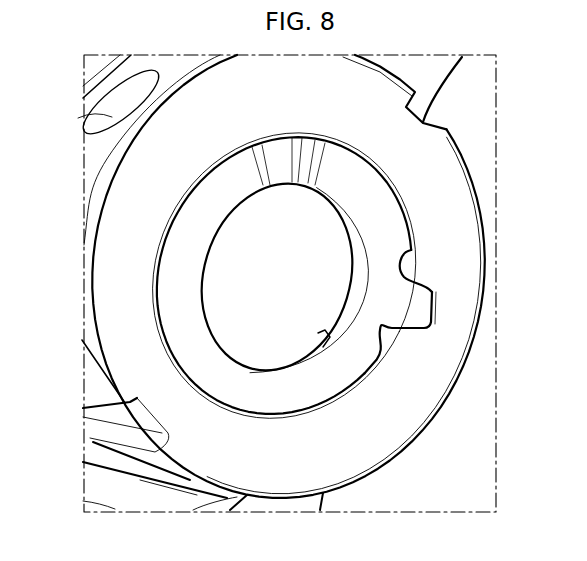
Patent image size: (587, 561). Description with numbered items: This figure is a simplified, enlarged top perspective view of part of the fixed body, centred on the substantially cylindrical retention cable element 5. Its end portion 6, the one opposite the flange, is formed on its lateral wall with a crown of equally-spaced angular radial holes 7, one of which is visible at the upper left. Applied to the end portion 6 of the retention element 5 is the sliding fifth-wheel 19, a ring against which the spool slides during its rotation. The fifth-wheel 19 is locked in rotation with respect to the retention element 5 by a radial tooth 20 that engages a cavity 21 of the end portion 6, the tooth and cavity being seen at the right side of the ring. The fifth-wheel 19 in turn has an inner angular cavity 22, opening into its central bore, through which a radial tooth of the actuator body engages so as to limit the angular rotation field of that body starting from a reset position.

The retention cable element 5 is at (105, 468).
The end portion 6 is at (397, 420).
The radial holes 7 is at (85, 116).
The sliding fifth-wheel 19 is at (383, 232).
The radial tooth 20 is at (402, 304).
The cavity 21 is at (420, 312).
The inner angular cavity 22 is at (302, 362).